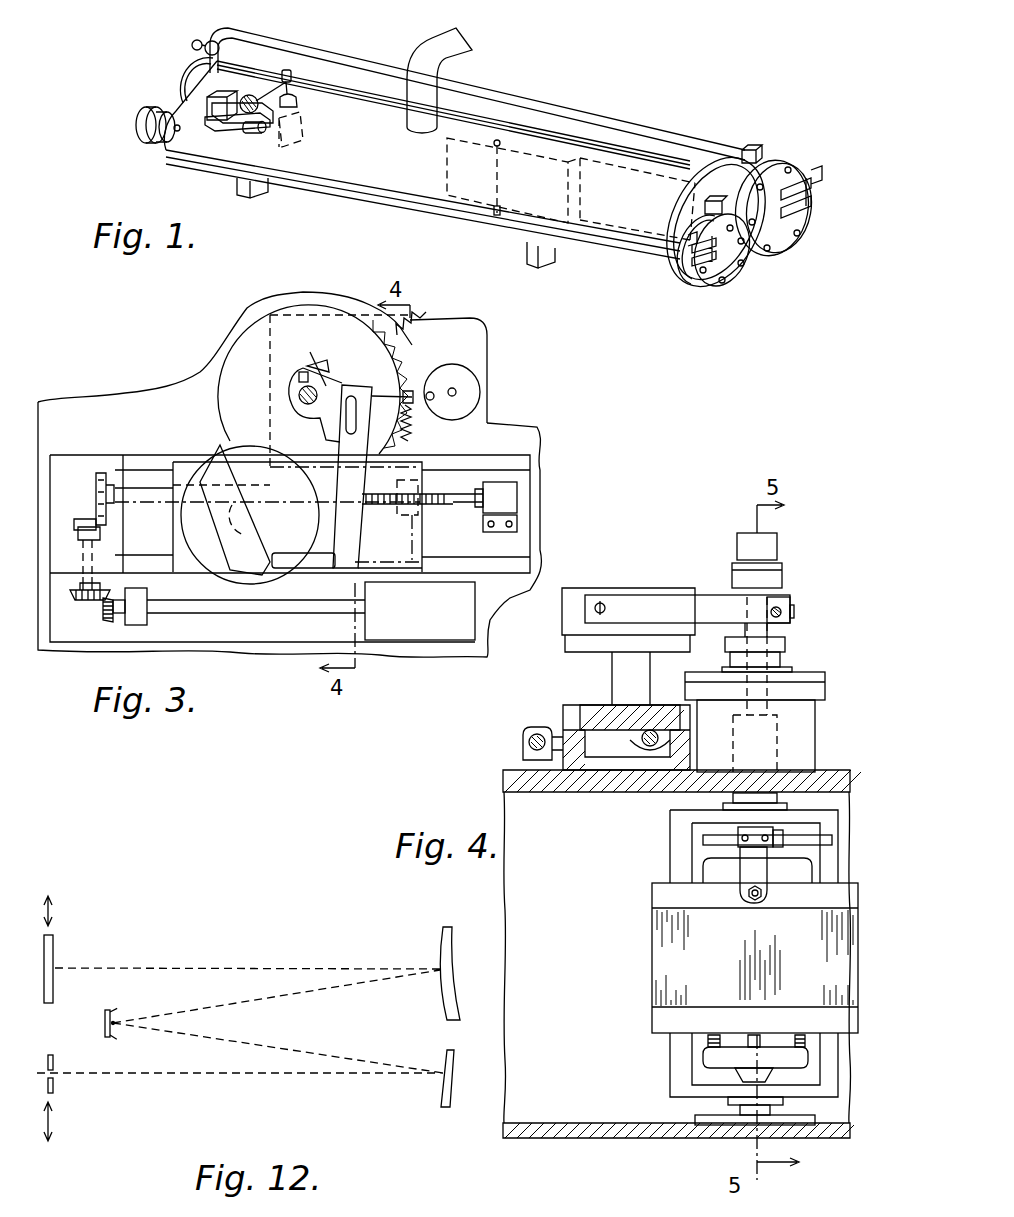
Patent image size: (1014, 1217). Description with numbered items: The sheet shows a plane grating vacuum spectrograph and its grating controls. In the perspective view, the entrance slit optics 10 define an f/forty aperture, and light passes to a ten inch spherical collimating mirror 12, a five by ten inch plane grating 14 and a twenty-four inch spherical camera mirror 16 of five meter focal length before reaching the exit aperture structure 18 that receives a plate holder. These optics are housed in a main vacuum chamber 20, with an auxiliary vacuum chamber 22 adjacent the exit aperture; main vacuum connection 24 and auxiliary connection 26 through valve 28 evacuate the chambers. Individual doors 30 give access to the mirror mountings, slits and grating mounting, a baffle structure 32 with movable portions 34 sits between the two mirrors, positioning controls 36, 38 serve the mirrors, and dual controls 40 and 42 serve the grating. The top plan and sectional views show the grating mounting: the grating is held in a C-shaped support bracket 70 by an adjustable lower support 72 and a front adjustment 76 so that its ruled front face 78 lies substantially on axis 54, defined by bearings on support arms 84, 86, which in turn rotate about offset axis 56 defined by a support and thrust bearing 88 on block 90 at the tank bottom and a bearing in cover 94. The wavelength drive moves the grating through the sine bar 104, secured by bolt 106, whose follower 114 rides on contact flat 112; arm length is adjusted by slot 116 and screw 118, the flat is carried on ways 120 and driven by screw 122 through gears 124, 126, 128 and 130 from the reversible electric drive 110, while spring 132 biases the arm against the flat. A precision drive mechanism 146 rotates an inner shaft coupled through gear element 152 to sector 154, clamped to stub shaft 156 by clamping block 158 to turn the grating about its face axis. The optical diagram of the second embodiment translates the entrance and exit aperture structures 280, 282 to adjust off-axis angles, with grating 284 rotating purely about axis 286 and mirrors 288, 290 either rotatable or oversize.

In FIG. 1, the entrance slit optics 10 is at (134, 140).
In FIG. 1, the spherical collimating mirror 12 is at (709, 283).
In FIG. 1, the plane grating 14 is at (305, 120).
In FIG. 4, the plane grating 14 is at (638, 935).
In FIG. 1, the spherical camera mirror 16 is at (780, 175).
In FIG. 1, the exit aperture structure 18 is at (262, 66).
In FIG. 1, the main vacuum chamber 20 is at (498, 122).
In FIG. 4, the main vacuum chamber 20 is at (506, 790).
In FIG. 1, the auxiliary vacuum chamber 22 is at (182, 96).
In FIG. 1, the main vacuum connection 24 is at (450, 54).
In FIG. 1, the auxiliary connection 26 is at (204, 52).
In FIG. 1, the valve 28 is at (190, 47).
In FIG. 1, the doors 30 is at (743, 273).
In FIG. 1, the baffle structure 32 is at (608, 177).
In FIG. 1, the movable portions 34 is at (450, 169).
In FIG. 1, the positioning control 36 is at (735, 168).
In FIG. 1, the positioning control 38 is at (752, 148).
In FIG. 1, the sine bar control 40 is at (240, 122).
In FIG. 1, the grating control 42 is at (293, 78).
In FIG. 3, the grating face axis 54 is at (456, 391).
In FIG. 3, the offset axis 56 is at (299, 395).
In FIG. 4, the C-shaped support bracket 70 is at (712, 1052).
In FIG. 4, the adjustable lower support 72 is at (756, 1042).
In FIG. 4, the front adjustment 76 is at (750, 906).
In FIG. 4, the ruled front face 78 is at (697, 968).
In FIG. 4, the support arm 84 is at (685, 1093).
In FIG. 4, the support arm 86 is at (820, 812).
In FIG. 4, the support and thrust bearing 88 is at (808, 723).
In FIG. 4, the block 90 is at (675, 1128).
In FIG. 4, the cover 94 is at (807, 673).
In FIG. 3, the sine bar 104 is at (333, 482).
In FIG. 4, the sine bar 104 is at (672, 603).
In FIG. 4, the bolt 106 is at (778, 607).
In FIG. 3, the reversible electric drive 110 is at (455, 625).
In FIG. 3, the contact flat 112 is at (222, 462).
In FIG. 4, the contact flat 112 is at (573, 601).
In FIG. 3, the follower 114 is at (272, 578).
In FIG. 3, the slot 116 is at (357, 384).
In FIG. 3, the screw 118 is at (310, 370).
In FIG. 3, the ways 120 is at (532, 466).
In FIG. 4, the ways 120 is at (568, 717).
In FIG. 3, the screw 122 is at (457, 502).
In FIG. 4, the screw 122 is at (650, 742).
In FIG. 3, the gear 124 is at (104, 472).
In FIG. 3, the gear 126 is at (90, 522).
In FIG. 3, the gear 128 is at (93, 601).
In FIG. 3, the gear 130 is at (106, 619).
In FIG. 3, the spring 132 is at (423, 424).
In FIG. 4, the precision drive mechanism 146 is at (768, 550).
In FIG. 3, the gear element 152 is at (424, 314).
In FIG. 3, the sector 154 is at (466, 357).
In FIG. 4, the sector 154 is at (707, 842).
In FIG. 4, the stub shaft 156 is at (753, 852).
In FIG. 4, the clamping block 158 is at (742, 833).
In FIG. 12, the entrance aperture structure 280 is at (55, 1085).
In FIG. 12, the exit aperture structure 282 is at (56, 950).
In FIG. 12, the grating 284 is at (104, 1023).
In FIG. 12, the rotation axis 286 is at (112, 1024).
In FIG. 12, the mirror 288 is at (438, 1098).
In FIG. 12, the mirror 290 is at (441, 946).